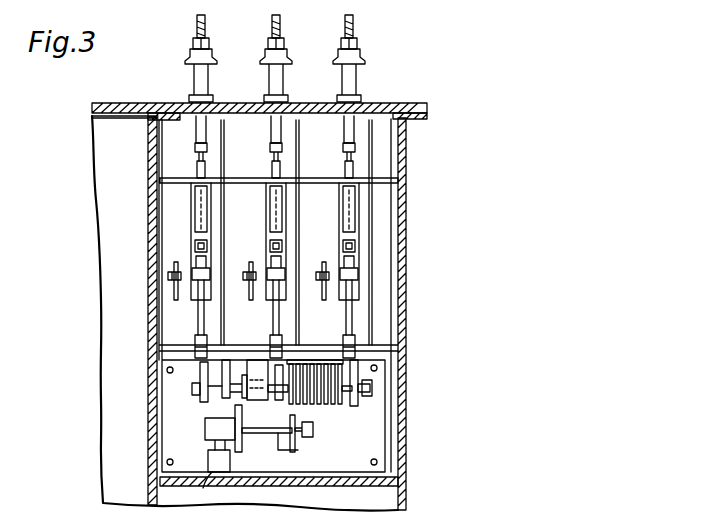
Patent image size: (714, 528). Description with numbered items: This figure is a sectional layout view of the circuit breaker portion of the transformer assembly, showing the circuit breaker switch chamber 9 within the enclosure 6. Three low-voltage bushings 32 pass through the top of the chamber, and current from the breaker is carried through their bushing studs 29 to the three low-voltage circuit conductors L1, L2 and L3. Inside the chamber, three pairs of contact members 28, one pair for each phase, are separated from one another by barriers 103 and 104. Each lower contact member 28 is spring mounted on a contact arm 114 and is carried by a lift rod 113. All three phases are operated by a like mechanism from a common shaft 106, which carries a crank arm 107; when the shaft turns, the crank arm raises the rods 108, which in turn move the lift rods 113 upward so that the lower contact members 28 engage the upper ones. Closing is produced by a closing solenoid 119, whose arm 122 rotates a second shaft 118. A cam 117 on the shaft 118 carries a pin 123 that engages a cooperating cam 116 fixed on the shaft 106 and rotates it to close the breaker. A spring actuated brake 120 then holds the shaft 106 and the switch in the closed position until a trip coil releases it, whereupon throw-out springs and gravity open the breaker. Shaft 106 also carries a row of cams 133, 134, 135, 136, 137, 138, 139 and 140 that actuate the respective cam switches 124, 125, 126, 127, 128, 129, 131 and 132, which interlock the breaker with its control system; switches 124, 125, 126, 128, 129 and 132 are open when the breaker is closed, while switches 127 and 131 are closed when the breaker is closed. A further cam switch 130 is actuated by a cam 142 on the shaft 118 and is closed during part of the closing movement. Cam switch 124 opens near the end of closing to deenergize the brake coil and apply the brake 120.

The low-voltage circuit conductor L1 is at (206, 23).
The low-voltage circuit conductor L2 is at (280, 23).
The low-voltage circuit conductor L3 is at (354, 23).
The enclosure 6 is at (403, 160).
The circuit breaker switch chamber 9 is at (389, 283).
The contact members 28 is at (357, 262).
The bushing studs 29 is at (205, 161).
The low-voltage bushings 32 is at (357, 79).
The barrier 103 is at (227, 228).
The barrier 104 is at (302, 228).
The shaft 106 is at (345, 388).
The crank arm 107 is at (200, 394).
The rods 108 is at (200, 375).
The lift rods 113 is at (283, 307).
The contact arm 114 is at (290, 276).
The cam 116 is at (227, 400).
The cam 117 is at (236, 444).
The shaft 118 is at (275, 430).
The closing solenoid 119 is at (235, 458).
The spring actuated brake 120 is at (258, 362).
The arm 122 is at (203, 488).
The pin 123 is at (241, 409).
The cam switch 124 is at (291, 362).
The cam switch 125 is at (298, 362).
The cam switch 126 is at (305, 362).
The cam switch 127 is at (312, 362).
The cam switch 128 is at (319, 362).
The cam switch 129 is at (326, 362).
The cam switch 130 is at (292, 450).
The cam switch 131 is at (333, 362).
The cam switch 132 is at (340, 362).
The cam 133 is at (289, 404).
The cam 134 is at (296, 404).
The cam 135 is at (303, 404).
The cam 136 is at (310, 404).
The cam 137 is at (317, 404).
The cam 138 is at (324, 404).
The cam 139 is at (331, 404).
The cam 140 is at (338, 404).
The cam 142 is at (286, 438).